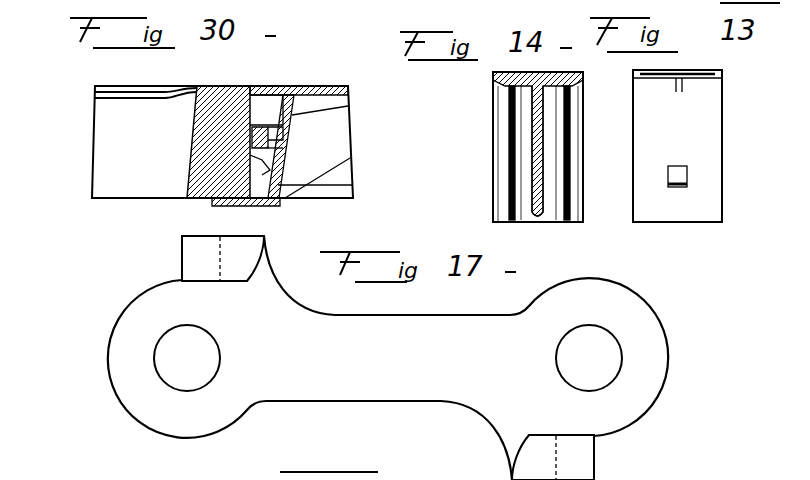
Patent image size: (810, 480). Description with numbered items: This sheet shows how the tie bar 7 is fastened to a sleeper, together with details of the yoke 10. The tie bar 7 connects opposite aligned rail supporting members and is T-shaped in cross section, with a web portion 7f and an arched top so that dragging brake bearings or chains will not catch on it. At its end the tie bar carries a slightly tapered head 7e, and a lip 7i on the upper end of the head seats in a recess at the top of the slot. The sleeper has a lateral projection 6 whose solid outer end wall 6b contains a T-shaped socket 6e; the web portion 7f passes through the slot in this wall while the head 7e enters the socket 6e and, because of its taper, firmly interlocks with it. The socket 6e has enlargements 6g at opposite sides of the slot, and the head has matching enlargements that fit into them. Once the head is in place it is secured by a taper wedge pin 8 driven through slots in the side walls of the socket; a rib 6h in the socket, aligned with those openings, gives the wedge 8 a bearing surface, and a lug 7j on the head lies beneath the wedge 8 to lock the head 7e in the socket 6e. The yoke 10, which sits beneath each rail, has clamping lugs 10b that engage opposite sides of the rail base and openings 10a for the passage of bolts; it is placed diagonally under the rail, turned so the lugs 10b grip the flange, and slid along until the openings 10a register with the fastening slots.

In FIG. 30, the lateral projection 6 is at (353, 185).
In FIG. 30, the solid outer end wall 6b is at (348, 106).
In FIG. 30, the T-shaped socket 6e is at (262, 180).
In FIG. 30, the enlargements 6g is at (190, 205).
In FIG. 30, the rib 6h is at (270, 148).
In FIG. 30, the tie bar 7 is at (118, 86).
In FIG. 14, the tie bar 7 is at (548, 72).
In FIG. 30, the head 7e is at (286, 93).
In FIG. 14, the head 7e is at (510, 138).
In FIG. 13, the head 7e is at (706, 137).
In FIG. 30, the web portion 7f is at (123, 183).
In FIG. 14, the web portion 7f is at (530, 197).
In FIG. 30, the lip 7i is at (260, 125).
In FIG. 14, the lip 7i is at (503, 66).
In FIG. 13, the lip 7i is at (706, 72).
In FIG. 30, the lug 7j is at (272, 162).
In FIG. 13, the lug 7j is at (688, 175).
In FIG. 30, the taper wedge pin 8 is at (270, 130).
In FIG. 17, the yoke 10 is at (353, 395).
In FIG. 17, the openings 10a is at (178, 334).
In FIG. 17, the clamping lugs 10b is at (193, 258).